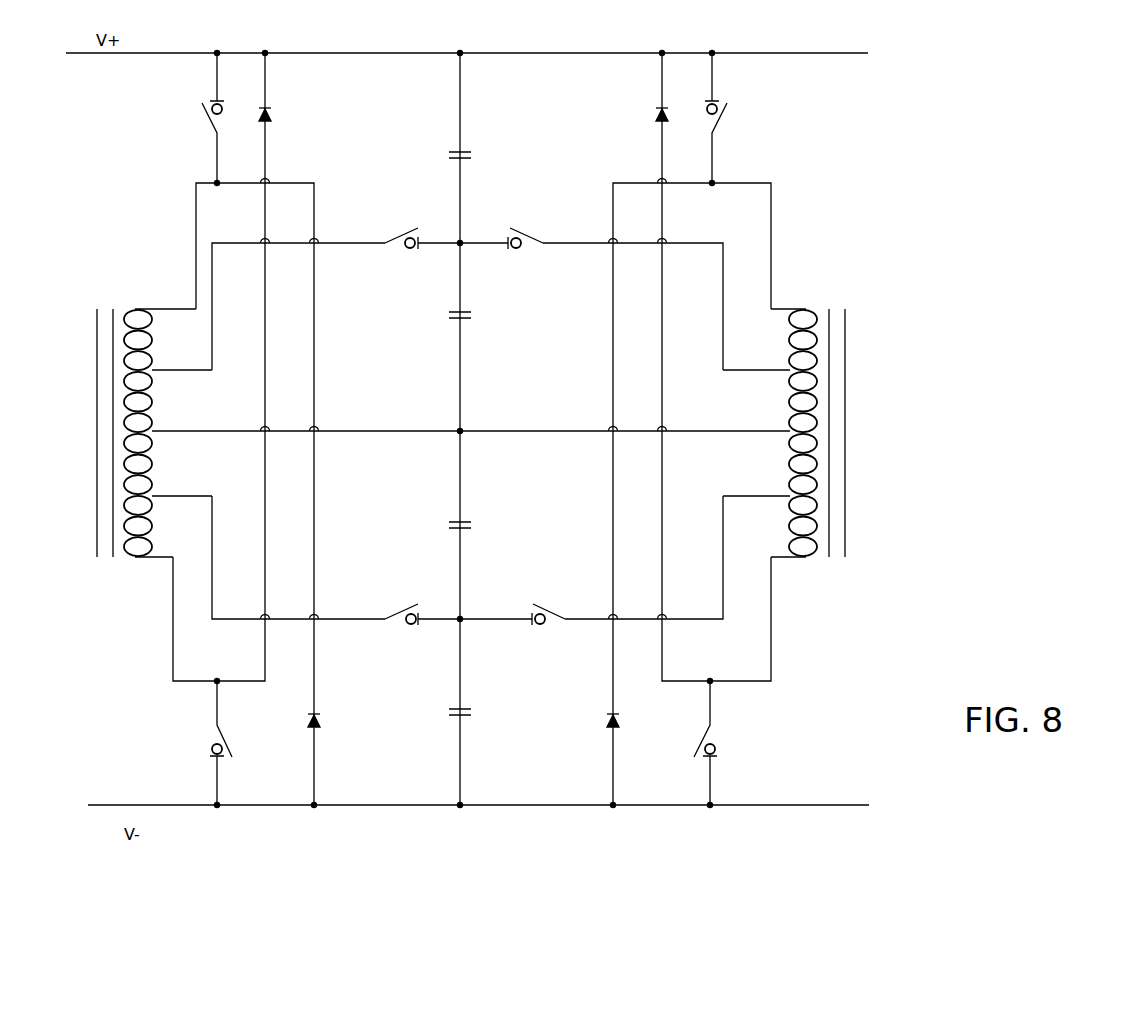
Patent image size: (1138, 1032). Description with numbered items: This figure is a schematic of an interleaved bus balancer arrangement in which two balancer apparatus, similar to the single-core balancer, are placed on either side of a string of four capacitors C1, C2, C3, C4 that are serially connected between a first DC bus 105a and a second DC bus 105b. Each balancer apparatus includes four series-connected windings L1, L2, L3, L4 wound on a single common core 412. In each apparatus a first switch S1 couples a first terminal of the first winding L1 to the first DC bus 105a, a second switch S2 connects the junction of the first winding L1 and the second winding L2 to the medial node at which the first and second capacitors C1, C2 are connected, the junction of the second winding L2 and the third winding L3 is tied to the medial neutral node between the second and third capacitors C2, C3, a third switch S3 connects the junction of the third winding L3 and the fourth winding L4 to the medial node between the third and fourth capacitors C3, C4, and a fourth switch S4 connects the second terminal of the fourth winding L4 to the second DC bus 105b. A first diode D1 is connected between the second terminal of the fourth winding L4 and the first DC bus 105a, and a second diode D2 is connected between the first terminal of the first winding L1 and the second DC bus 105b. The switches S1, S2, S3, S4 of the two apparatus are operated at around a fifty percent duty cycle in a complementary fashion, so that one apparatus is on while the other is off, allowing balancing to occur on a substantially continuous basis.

The first DC bus 105a is at (162, 53).
The second DC bus 105b is at (270, 805).
The single common core 412 is at (97, 432).
The first switch S1 is at (464, 118).
The second switch S2 is at (464, 228).
The third switch S3 is at (475, 604).
The fourth switch S4 is at (463, 743).
The first diode D1 is at (463, 417).
The second diode D2 is at (328, 720).
The first winding L1 is at (470, 340).
The second winding L2 is at (470, 402).
The third winding L3 is at (470, 464).
The fourth winding L4 is at (470, 526).
The first capacitor C1 is at (473, 158).
The second capacitor C2 is at (479, 318).
The third capacitor C3 is at (476, 527).
The fourth capacitor C4 is at (477, 714).